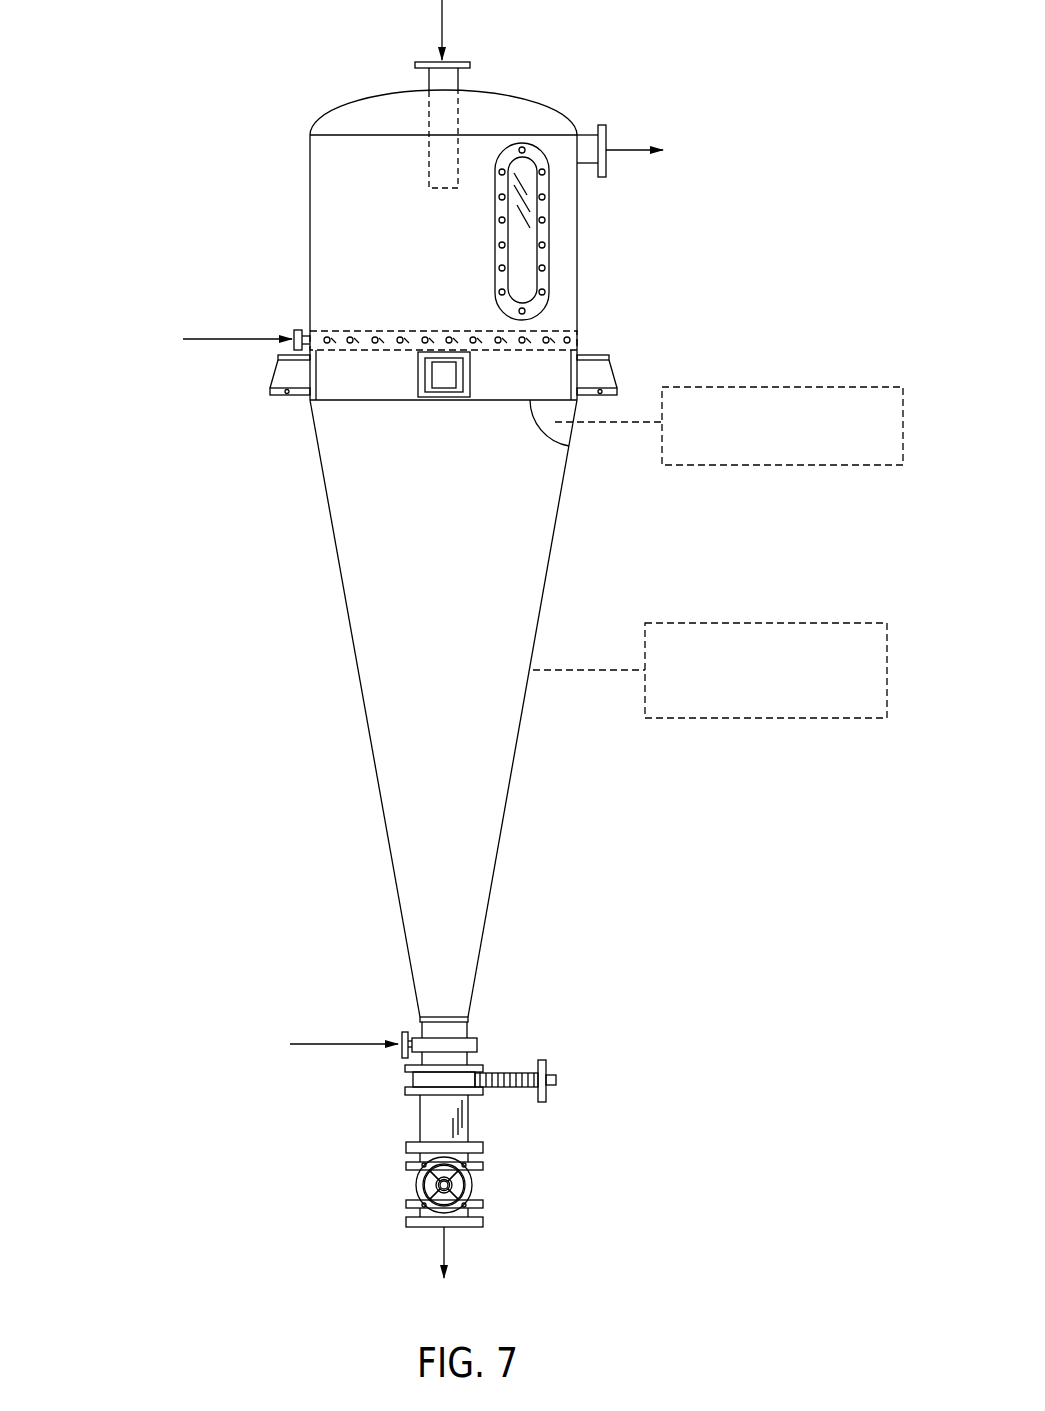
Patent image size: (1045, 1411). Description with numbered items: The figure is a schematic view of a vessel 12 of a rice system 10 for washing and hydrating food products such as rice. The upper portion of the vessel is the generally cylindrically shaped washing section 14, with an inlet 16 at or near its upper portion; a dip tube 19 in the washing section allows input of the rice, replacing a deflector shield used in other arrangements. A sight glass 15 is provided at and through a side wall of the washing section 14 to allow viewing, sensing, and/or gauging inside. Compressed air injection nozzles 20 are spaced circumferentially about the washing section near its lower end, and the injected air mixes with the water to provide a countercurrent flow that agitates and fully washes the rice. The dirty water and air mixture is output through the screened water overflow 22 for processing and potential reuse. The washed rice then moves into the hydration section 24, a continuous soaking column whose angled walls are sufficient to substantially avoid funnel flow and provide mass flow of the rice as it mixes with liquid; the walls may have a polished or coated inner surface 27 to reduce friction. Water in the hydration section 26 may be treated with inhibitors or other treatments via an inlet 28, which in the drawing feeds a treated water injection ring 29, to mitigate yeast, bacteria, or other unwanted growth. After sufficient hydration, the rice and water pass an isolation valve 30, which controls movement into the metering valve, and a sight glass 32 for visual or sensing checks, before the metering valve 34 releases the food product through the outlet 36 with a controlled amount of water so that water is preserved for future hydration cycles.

The rice system 10 is at (128, 86).
The vessel 12 is at (300, 226).
The washing section 14 is at (578, 268).
The sight glass 15 is at (549, 226).
The inlet 16 is at (452, 62).
The dip tube 19 is at (458, 105).
The compressed air injection nozzles 20 is at (290, 330).
The screened water overflow 22 is at (606, 128).
The hydration section 24 is at (557, 523).
The hydration section 26 is at (512, 773).
The polished or coated inner surface 27 is at (765, 622).
The inlet 28 is at (402, 1036).
The treated water injection ring 29 is at (445, 1045).
The isolation valve 30 is at (548, 1068).
The sight glass 32 is at (468, 1130).
The metering valve 34 is at (478, 1185).
The outlet 36 is at (465, 1228).